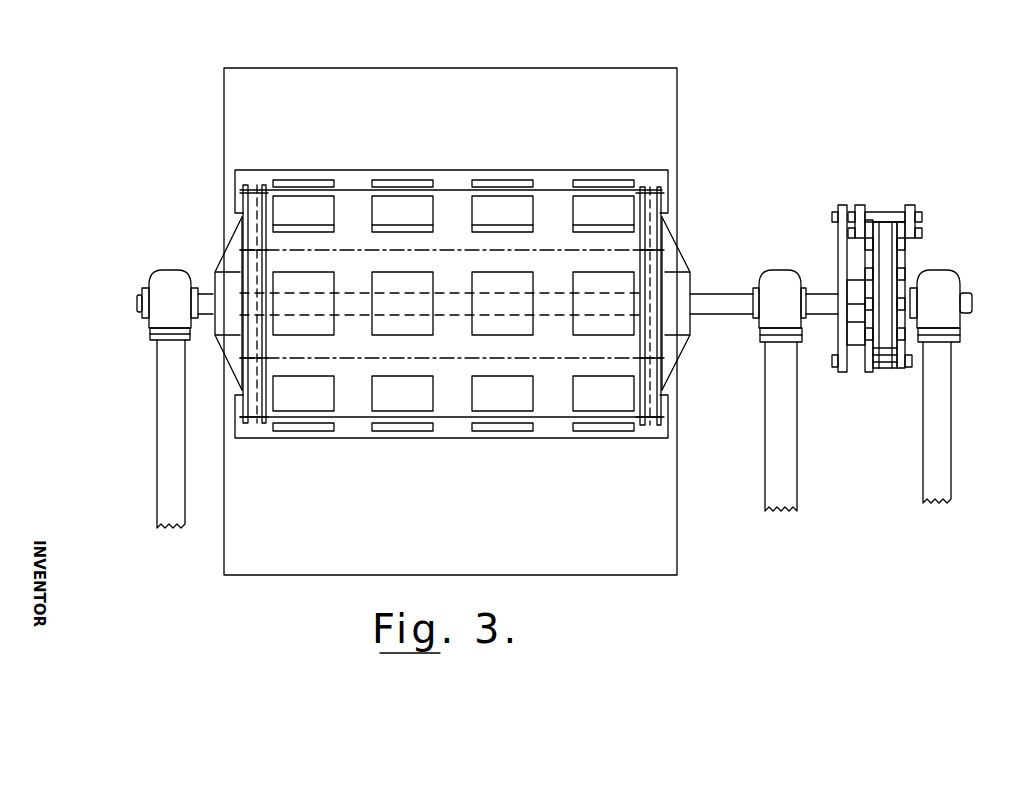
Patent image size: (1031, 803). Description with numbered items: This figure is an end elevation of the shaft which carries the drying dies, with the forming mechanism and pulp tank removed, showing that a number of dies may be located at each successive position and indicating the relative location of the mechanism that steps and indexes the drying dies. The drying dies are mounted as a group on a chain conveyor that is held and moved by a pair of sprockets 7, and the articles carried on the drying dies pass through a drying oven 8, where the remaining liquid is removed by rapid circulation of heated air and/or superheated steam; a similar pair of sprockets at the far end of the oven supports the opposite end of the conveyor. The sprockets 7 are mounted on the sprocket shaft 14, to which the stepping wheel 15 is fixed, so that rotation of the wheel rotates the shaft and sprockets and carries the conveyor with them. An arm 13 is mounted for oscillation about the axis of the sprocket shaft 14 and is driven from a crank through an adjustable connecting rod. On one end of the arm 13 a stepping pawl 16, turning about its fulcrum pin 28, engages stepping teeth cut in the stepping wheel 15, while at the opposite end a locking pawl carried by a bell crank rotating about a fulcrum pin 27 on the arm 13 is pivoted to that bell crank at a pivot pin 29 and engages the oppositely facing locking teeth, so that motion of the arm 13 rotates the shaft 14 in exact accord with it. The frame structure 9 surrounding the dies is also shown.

The sprockets 7 is at (220, 268).
The drying oven 8 is at (224, 108).
The cage frame 9 is at (294, 168).
The arm 13 is at (838, 252).
The sprocket shaft 14 is at (138, 302).
The stepping wheel 15 is at (907, 261).
The stepping pawl 16 is at (882, 372).
The fulcrum pin 27 is at (922, 215).
The fulcrum pin 28 is at (912, 362).
The pivot pin 29 is at (922, 233).